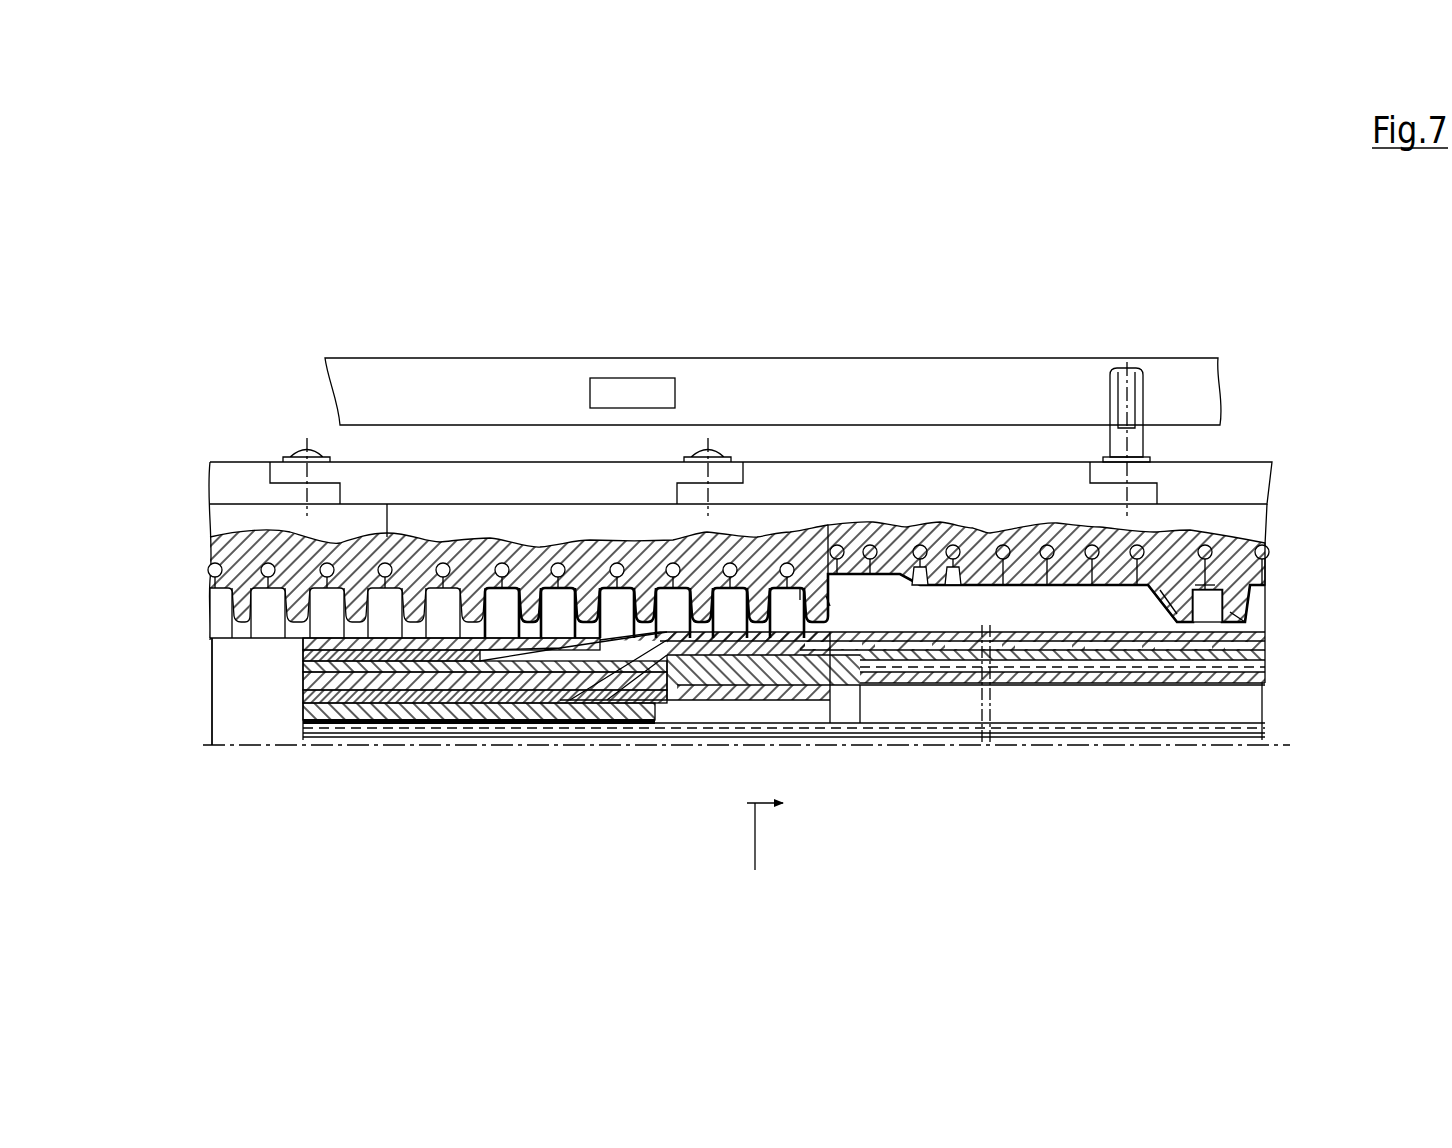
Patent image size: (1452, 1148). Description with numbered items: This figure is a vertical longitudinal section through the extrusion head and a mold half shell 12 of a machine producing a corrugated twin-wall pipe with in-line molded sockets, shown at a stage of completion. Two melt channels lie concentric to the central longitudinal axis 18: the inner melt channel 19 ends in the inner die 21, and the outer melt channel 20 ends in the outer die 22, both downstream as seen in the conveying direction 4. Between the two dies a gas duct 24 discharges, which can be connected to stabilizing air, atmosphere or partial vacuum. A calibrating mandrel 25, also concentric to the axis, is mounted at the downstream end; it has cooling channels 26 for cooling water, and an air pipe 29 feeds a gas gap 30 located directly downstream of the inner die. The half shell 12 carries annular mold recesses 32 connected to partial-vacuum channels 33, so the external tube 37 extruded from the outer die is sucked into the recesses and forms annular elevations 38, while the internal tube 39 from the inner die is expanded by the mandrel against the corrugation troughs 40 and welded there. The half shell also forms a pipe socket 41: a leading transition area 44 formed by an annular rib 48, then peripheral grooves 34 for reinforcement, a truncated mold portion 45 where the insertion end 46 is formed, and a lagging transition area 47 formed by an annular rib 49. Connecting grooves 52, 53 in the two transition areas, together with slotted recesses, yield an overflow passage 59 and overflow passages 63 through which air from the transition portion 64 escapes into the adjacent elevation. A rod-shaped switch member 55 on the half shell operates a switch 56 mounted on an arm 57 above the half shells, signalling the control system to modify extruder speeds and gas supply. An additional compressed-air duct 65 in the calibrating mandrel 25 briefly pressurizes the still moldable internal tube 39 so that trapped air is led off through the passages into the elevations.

The conveying direction 4 is at (765, 857).
The half shell 12 is at (497, 500).
The central longitudinal axis 18 is at (338, 745).
The inner melt channel 19 is at (303, 697).
The outer melt channel 20 is at (303, 650).
The inner die 21 is at (630, 695).
The outer die 22 is at (420, 590).
The gas duct 24 is at (470, 722).
The calibrating mandrel 25 is at (1262, 652).
The cooling channels 26 is at (1250, 645).
The air pipe 29 is at (1262, 728).
The gas gap 30 is at (636, 703).
The annular mold recesses 32 is at (270, 608).
The partial-vacuum channels 33 is at (437, 633).
The peripheral grooves 34 is at (958, 580).
The external tube 37 is at (660, 600).
The annular elevations 38 is at (777, 600).
The internal tube 39 is at (1217, 603).
The corrugation troughs 40 is at (570, 680).
The pipe socket 41 is at (1020, 580).
The transition area 44 is at (1205, 585).
The truncated mold portion 45 is at (892, 587).
The insertion end 46 is at (868, 578).
The transition area 47 is at (815, 590).
The annular rib 48 is at (1240, 600).
The annular rib 49 is at (795, 598).
The connecting grooves 52 is at (1172, 595).
The connecting grooves 53 is at (830, 602).
The switch member 55 is at (1135, 382).
The switch 56 is at (605, 388).
The arm 57 is at (512, 388).
The overflow passage 59 is at (1150, 665).
The overflow passages 63 is at (840, 655).
The transition portion 64 is at (803, 590).
The compressed-air duct 65 is at (970, 685).